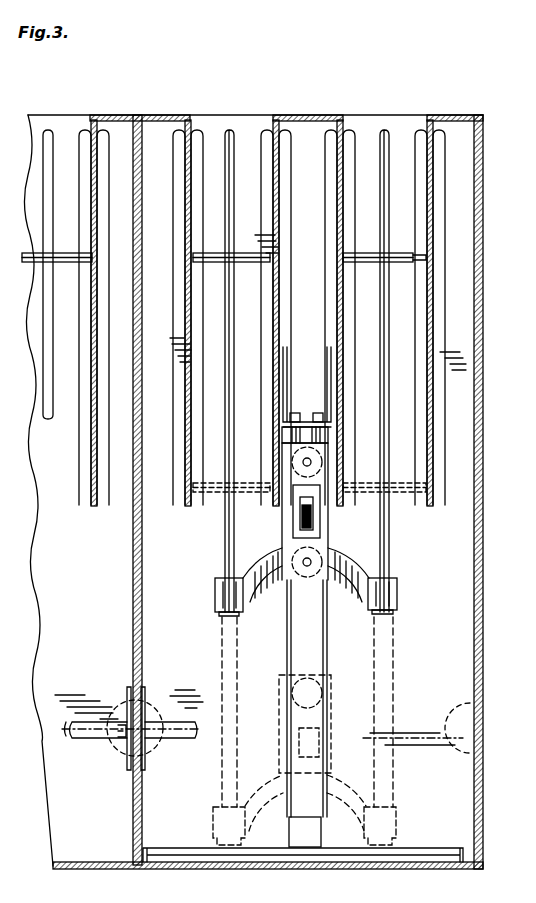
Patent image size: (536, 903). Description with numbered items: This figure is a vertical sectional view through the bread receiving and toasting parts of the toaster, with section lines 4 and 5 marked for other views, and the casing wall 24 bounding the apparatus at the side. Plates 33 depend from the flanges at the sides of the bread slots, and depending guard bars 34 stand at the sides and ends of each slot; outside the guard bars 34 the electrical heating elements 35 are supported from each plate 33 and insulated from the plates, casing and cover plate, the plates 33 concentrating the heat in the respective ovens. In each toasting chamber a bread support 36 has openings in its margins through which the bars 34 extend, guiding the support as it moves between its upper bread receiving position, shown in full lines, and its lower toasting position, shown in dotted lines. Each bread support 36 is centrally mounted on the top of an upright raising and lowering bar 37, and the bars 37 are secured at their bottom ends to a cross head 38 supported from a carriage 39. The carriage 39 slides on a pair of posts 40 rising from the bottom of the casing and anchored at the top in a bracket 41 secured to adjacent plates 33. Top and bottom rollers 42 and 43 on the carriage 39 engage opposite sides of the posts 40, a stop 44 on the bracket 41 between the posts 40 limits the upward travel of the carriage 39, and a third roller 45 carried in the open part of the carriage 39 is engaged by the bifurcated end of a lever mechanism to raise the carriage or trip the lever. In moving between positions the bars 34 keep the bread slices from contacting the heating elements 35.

The housing 24 is at (470, 612).
The plate 33 is at (331, 275).
The guard bar 34 is at (316, 212).
The electrical heating element 35 is at (428, 285).
The bread support 36 is at (213, 257).
The raising and lowering bar 37 is at (385, 418).
The cross head 38 is at (368, 545).
The carriage 39 is at (282, 525).
The post 40 is at (291, 693).
The bracket 41 is at (328, 373).
The top roller 42 is at (330, 449).
The bottom roller 43 is at (295, 572).
The stop 44 is at (299, 433).
The third roller 45 is at (308, 517).
The section line 4 is at (308, 355).
The section line 5 is at (218, 528).